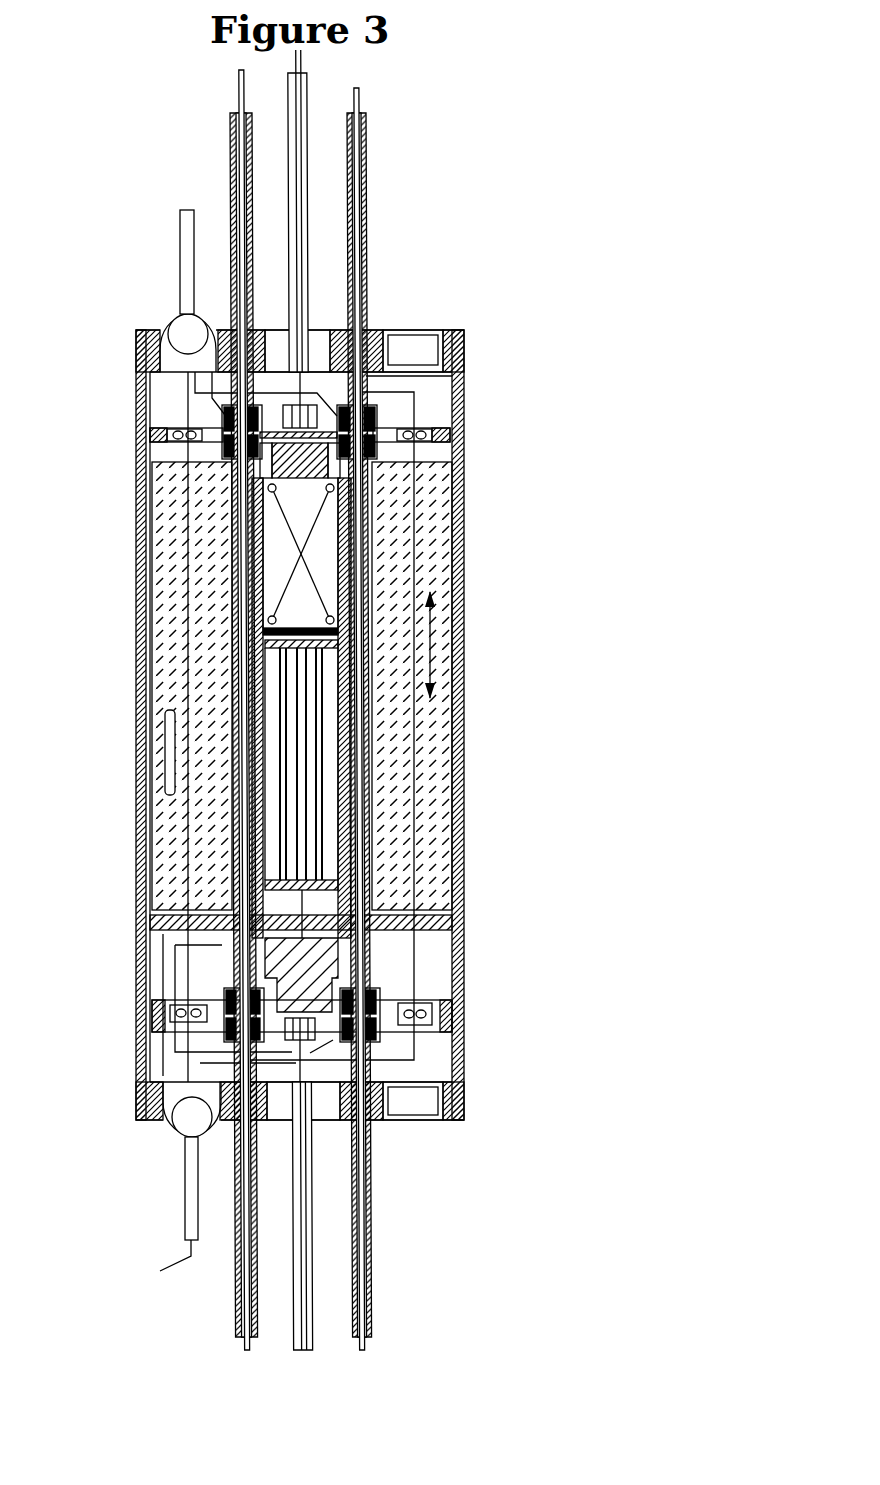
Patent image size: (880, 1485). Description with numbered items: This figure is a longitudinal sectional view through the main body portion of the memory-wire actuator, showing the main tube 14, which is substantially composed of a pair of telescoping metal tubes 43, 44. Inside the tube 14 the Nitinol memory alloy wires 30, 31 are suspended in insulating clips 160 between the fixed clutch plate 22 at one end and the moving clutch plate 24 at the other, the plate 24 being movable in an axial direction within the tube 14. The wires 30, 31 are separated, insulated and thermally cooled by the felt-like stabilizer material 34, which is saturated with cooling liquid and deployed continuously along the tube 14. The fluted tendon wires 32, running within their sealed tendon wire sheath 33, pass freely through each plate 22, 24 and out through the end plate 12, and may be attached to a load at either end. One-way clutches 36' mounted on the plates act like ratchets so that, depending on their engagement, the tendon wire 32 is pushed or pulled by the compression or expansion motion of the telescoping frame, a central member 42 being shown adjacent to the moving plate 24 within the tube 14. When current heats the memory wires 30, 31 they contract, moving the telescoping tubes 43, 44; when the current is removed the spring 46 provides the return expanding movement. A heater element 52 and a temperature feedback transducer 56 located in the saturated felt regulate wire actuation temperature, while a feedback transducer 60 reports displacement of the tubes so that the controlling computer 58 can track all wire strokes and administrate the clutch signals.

The end plate 12 is at (456, 329).
The main tube 14 is at (467, 588).
The fixed clutch plate 22 is at (448, 426).
The moving clutch plate 24 is at (436, 994).
The memory alloy wire 30 is at (417, 497).
The second array of memory alloy wires 31 is at (194, 538).
The fluted tendon wire 32 is at (378, 108).
The guide tube 33 is at (374, 224).
The memory wire stabilizer 34 is at (431, 640).
The one-way clutch 36' is at (454, 419).
The support block 42 is at (314, 942).
The telescoping metal tube 43 is at (289, 714).
The telescoping metal tube 44 is at (261, 748).
The spring 46 is at (287, 561).
The heater element 52 is at (322, 798).
The temperature feedback transducer 56 is at (164, 793).
The controlling computer 58 is at (164, 261).
The feedback transducer 60 is at (232, 962).
The insulating clip 160 is at (164, 447).